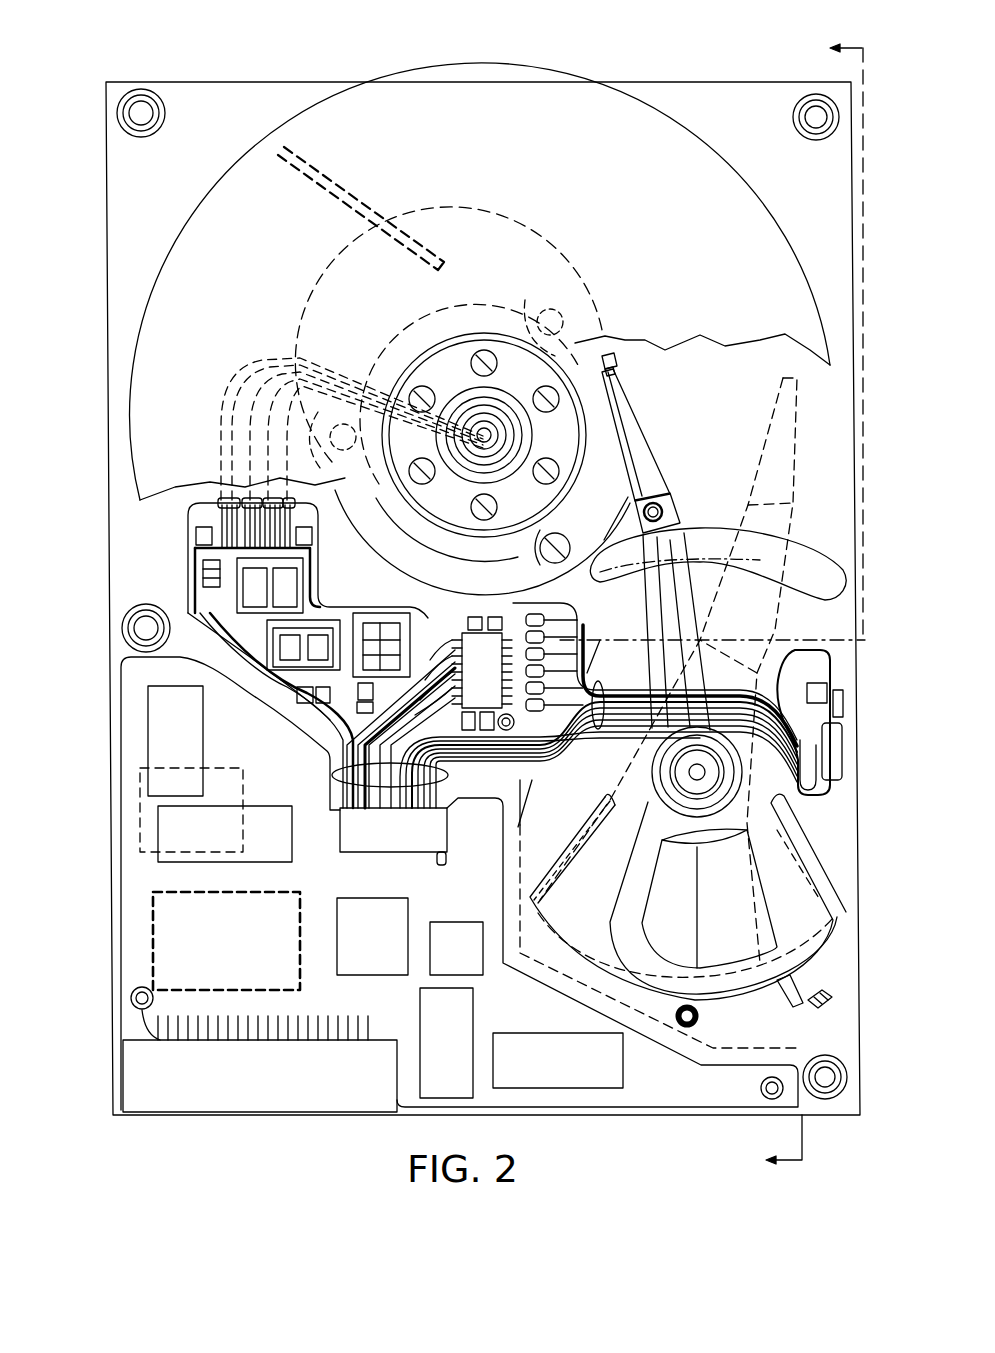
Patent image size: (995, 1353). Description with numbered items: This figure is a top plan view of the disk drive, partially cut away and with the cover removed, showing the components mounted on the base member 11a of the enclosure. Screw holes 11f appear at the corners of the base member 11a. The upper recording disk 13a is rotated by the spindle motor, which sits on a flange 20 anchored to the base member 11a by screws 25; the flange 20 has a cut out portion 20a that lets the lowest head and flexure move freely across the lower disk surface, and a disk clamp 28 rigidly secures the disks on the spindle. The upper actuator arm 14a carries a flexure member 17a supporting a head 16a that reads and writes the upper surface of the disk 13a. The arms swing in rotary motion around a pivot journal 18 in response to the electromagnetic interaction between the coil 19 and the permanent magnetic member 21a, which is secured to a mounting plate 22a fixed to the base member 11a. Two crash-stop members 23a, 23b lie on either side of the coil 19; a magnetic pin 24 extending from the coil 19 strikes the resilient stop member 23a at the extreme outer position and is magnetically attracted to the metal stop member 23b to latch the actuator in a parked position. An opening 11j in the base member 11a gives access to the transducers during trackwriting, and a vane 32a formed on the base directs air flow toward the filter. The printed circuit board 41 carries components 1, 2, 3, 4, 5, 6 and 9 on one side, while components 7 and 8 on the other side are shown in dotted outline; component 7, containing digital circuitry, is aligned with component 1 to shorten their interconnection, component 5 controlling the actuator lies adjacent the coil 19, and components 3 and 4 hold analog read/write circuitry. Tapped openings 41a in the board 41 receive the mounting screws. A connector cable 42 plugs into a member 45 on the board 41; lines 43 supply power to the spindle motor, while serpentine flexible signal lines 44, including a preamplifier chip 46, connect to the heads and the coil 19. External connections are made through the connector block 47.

The component 1 is at (235, 957).
The component 2 is at (278, 849).
The circuit component 3 is at (380, 944).
The circuit component 4 is at (453, 1054).
The component 5 is at (551, 1072).
The component 6 is at (190, 749).
The component 7 is at (153, 920).
The component 8 is at (140, 790).
The component 9 is at (465, 959).
The base member 11a is at (104, 420).
The mounting screw holes 11f is at (117, 112).
The opening 11j is at (708, 540).
The disk 13a is at (557, 211).
The actuator arm 14a is at (648, 638).
The head 16a is at (618, 362).
The flexure member 17a is at (638, 398).
The pivot journal 18 is at (673, 765).
The coil 19 is at (827, 967).
The flange 20 is at (443, 574).
The cut out portion 20a is at (478, 330).
The permanent magnetic member 21a is at (782, 915).
The mounting plate 22a is at (673, 893).
The crash-stop member 23a is at (694, 1025).
The crash-stop member 23b is at (822, 1006).
The magnetic pin 24 is at (788, 1010).
The screws 25 is at (572, 548).
The disk clamp 28 is at (565, 449).
The vane 32a is at (378, 186).
The printed circuit board 41 is at (538, 1014).
The tapped openings 41a is at (130, 1002).
The connector cable 42 is at (450, 775).
The group of lines 43 is at (250, 627).
The signal lines 44 is at (578, 672).
The member 45 is at (402, 844).
The chip 46 is at (497, 682).
The connector block 47 is at (273, 1089).